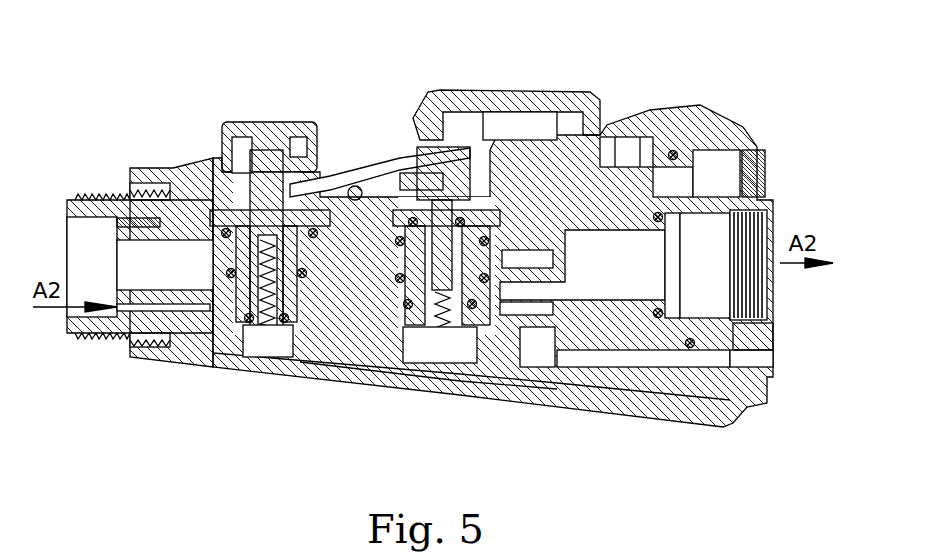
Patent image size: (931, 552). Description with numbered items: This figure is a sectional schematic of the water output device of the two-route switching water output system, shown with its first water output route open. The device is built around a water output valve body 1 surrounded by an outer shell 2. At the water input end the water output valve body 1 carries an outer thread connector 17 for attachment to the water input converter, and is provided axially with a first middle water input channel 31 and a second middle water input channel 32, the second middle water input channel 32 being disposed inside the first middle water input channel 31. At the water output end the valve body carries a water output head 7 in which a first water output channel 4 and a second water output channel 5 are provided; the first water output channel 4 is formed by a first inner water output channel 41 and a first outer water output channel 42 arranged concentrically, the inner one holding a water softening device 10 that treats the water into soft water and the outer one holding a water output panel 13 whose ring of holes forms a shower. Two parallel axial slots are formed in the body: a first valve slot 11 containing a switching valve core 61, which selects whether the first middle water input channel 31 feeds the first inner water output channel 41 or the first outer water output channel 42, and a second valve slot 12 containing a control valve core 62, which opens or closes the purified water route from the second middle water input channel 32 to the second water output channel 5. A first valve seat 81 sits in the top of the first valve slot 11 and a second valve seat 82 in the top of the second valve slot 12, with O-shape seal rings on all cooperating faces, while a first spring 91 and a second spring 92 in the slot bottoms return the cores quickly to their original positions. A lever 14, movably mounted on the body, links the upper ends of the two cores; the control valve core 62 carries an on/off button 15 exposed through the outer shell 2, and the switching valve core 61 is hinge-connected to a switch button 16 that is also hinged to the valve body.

The water output valve body 1 is at (357, 323).
The outer shell 2 is at (540, 395).
The first water output channel 4 is at (677, 159).
The second water output channel 5 is at (647, 360).
The water output head 7 is at (733, 138).
The water softening device 10 is at (713, 267).
The first valve slot 11 is at (418, 343).
The second valve slot 12 is at (240, 360).
The water output panel 13 is at (757, 157).
The lever 14 is at (350, 173).
The on/off button 15 is at (260, 123).
The switch button 16 is at (540, 103).
The outer thread connector 17 is at (112, 197).
The first middle water input channel 31 is at (123, 330).
The second middle water input channel 32 is at (182, 257).
The first inner water output channel 41 is at (603, 263).
The first outer water output channel 42 is at (712, 167).
The switching valve core 61 is at (460, 153).
The control valve core 62 is at (265, 170).
The first valve seat 81 is at (402, 182).
The second valve seat 82 is at (235, 197).
The first spring 91 is at (455, 373).
The second spring 92 is at (265, 337).